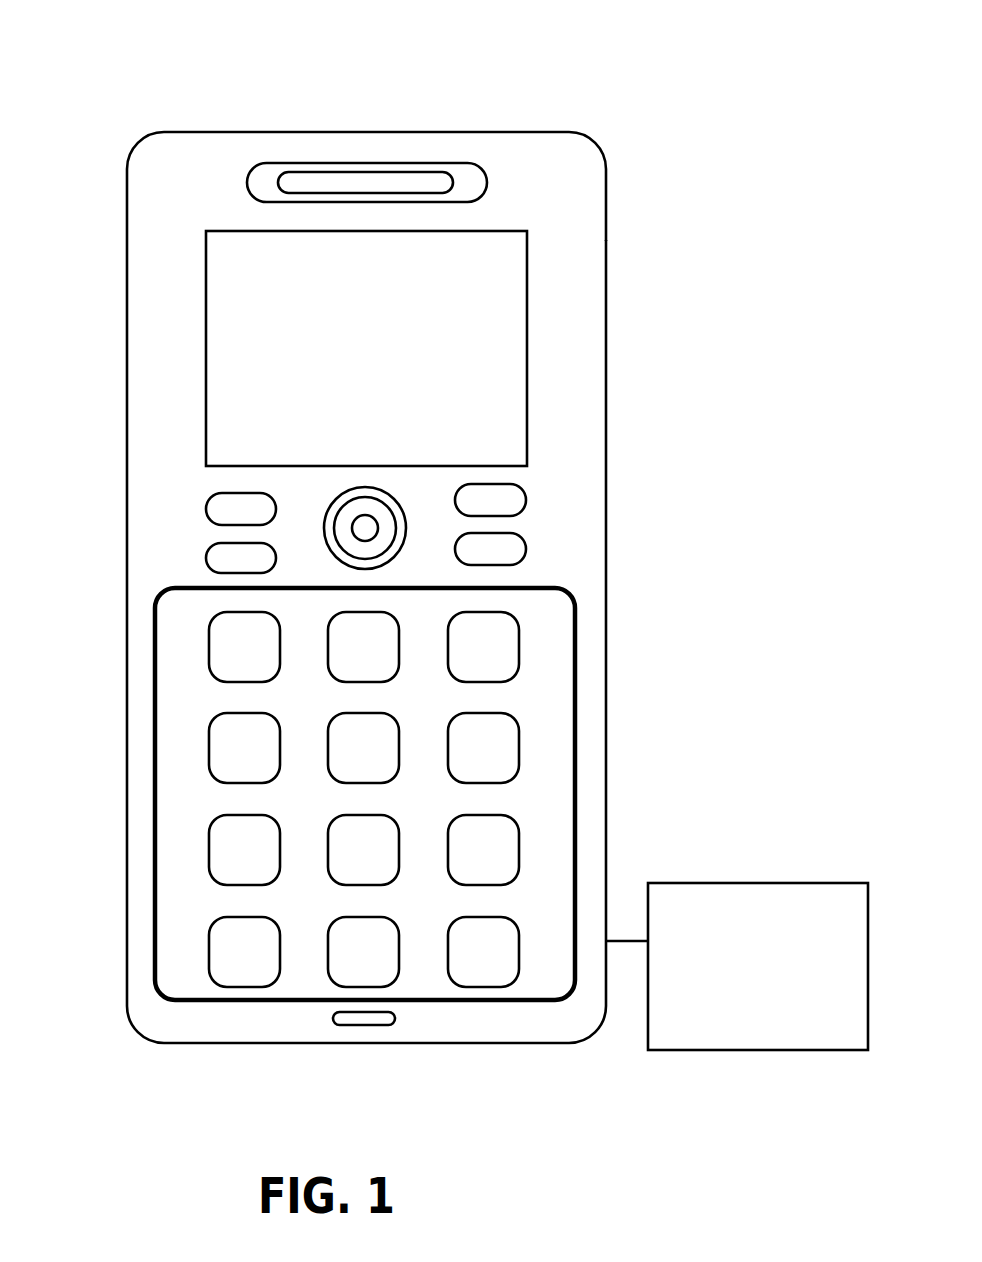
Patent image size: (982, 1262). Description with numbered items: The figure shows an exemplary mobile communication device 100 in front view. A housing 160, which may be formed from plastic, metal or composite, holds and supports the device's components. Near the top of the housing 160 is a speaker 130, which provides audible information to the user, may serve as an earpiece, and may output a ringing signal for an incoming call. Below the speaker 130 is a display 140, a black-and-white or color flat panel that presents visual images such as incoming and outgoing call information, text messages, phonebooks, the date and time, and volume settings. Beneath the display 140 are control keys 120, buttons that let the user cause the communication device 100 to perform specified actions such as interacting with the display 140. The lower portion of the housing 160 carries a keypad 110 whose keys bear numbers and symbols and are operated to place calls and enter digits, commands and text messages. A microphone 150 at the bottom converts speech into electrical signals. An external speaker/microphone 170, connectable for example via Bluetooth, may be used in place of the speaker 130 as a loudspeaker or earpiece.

The communication device 100 is at (86, 72).
The keypad 110 is at (309, 794).
The control keys 120 is at (628, 471).
The speaker 130 is at (367, 144).
The display 140 is at (372, 346).
The microphone 150 is at (347, 1051).
The housing 160 is at (649, 199).
The external speaker/microphone 170 is at (737, 966).